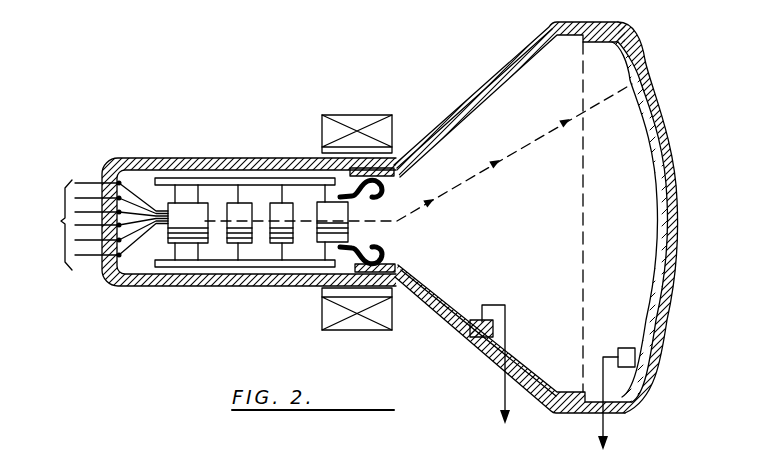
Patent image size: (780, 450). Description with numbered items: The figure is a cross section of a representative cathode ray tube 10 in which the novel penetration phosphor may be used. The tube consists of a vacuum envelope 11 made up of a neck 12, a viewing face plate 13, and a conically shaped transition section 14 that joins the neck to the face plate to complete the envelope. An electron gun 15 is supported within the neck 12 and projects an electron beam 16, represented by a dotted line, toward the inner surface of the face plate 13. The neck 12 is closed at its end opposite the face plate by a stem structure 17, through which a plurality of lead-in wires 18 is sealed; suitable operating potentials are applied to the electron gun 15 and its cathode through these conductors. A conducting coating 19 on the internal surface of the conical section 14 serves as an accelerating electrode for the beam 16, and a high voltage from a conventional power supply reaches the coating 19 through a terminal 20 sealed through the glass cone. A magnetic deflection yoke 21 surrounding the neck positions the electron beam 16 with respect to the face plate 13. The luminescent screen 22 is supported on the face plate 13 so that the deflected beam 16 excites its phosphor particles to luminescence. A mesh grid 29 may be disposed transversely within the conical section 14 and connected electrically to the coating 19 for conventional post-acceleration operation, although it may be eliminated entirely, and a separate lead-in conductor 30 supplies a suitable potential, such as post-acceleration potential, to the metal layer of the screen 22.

The tube 10 is at (449, 76).
The vacuum envelope 11 is at (508, 63).
The neck 12 is at (230, 157).
The viewing face plate 13 is at (645, 68).
The conically shaped transition section 14 is at (445, 112).
The electron gun 15 is at (223, 268).
The electron beam 16 is at (513, 152).
The stem structure 17 is at (123, 288).
The lead-in wires 18 is at (73, 225).
The conducting coating 19 is at (523, 367).
The terminal 20 is at (505, 390).
The magnetic deflection yoke 21 is at (378, 113).
The luminescent screen 22 is at (655, 217).
The mesh grid 29 is at (583, 262).
The lead-in conductor 30 is at (605, 422).